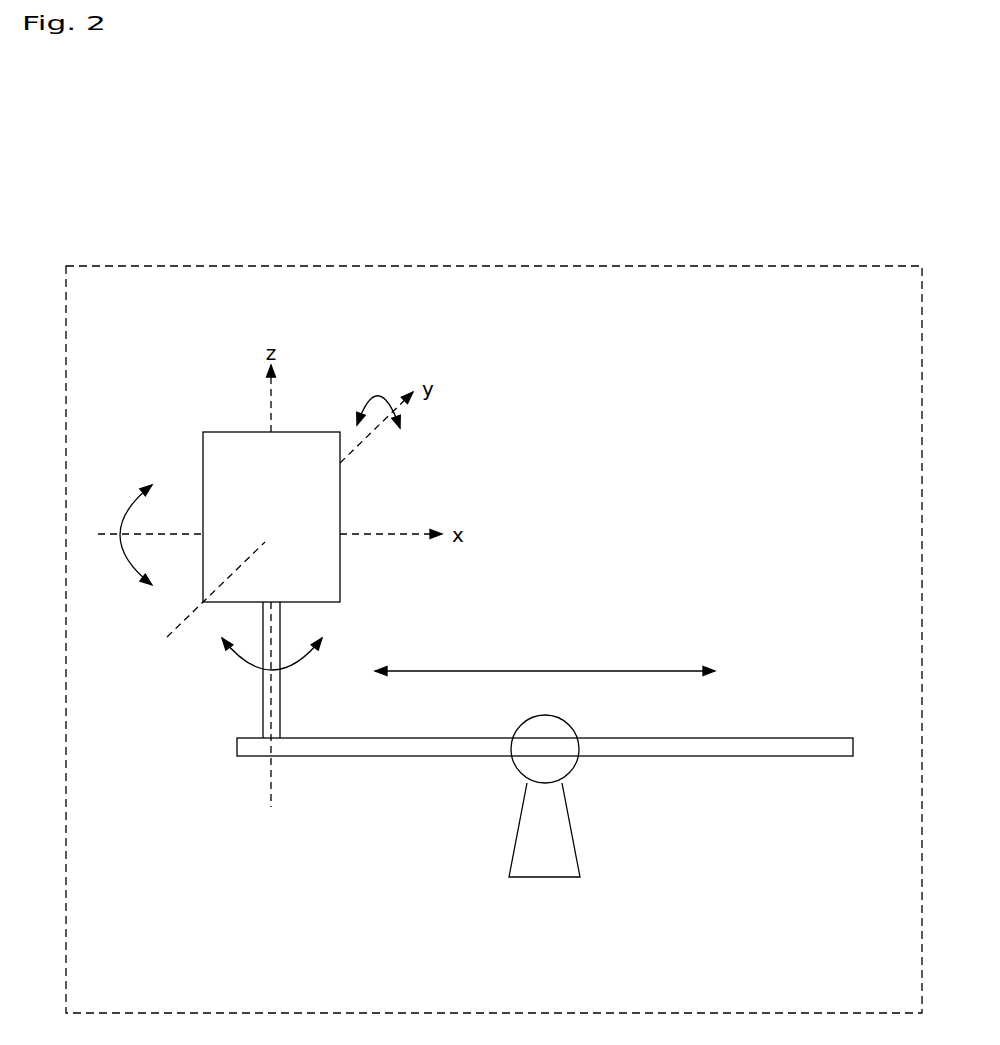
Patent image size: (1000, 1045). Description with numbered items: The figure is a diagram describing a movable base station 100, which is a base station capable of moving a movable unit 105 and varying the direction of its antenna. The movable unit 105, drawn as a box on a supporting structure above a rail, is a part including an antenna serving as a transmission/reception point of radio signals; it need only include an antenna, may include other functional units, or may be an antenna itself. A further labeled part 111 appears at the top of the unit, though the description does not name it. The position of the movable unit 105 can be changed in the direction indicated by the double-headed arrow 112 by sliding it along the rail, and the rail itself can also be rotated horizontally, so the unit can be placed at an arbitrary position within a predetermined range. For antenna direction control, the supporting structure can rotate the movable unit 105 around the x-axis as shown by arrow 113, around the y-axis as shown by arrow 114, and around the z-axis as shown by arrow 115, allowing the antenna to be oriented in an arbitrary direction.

The movable base station 100 is at (873, 263).
The movable unit 105 is at (340, 565).
The movable unit 111 is at (235, 432).
The direction of position change 112 is at (625, 671).
The rotation around x-axis 113 is at (145, 492).
The rotation around y-axis 114 is at (372, 400).
The rotation around z-axis 115 is at (237, 662).